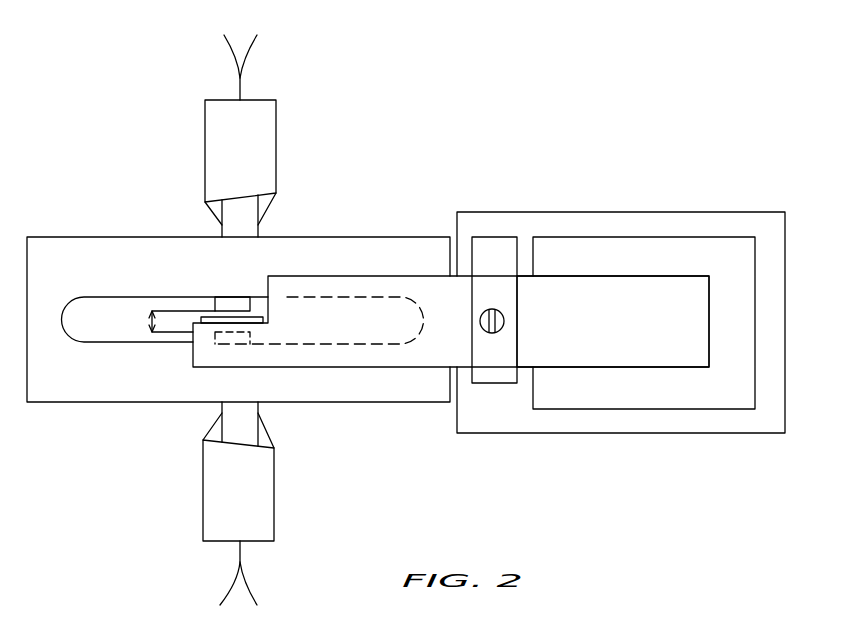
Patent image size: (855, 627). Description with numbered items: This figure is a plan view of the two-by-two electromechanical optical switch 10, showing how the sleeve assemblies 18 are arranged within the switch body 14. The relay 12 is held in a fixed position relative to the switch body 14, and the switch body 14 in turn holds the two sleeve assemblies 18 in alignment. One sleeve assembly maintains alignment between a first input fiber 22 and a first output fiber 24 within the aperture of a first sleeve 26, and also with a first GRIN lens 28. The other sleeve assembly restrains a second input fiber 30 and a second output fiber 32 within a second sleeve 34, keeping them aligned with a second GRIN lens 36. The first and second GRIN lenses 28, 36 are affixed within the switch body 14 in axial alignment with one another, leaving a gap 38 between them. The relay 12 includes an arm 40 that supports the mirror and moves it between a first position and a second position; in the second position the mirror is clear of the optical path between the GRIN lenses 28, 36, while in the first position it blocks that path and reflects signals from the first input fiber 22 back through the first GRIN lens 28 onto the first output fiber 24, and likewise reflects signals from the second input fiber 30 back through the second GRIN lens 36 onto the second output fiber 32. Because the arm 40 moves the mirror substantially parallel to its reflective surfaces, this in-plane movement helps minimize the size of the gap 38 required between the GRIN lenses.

The electromechanical optical switch 10 is at (563, 123).
The relay 12 is at (755, 435).
The switch body 14 is at (60, 237).
The sleeve assemblies 18 is at (277, 117).
The first input fiber 22 is at (225, 47).
The first output fiber 24 is at (257, 40).
The first sleeve 26 is at (215, 142).
The first GRIN lens 28 is at (247, 213).
The second input fiber 30 is at (228, 588).
The second output fiber 32 is at (250, 592).
The second sleeve 34 is at (220, 492).
The second GRIN lens 36 is at (243, 418).
The gap 38 is at (152, 315).
The arm 40 is at (618, 335).